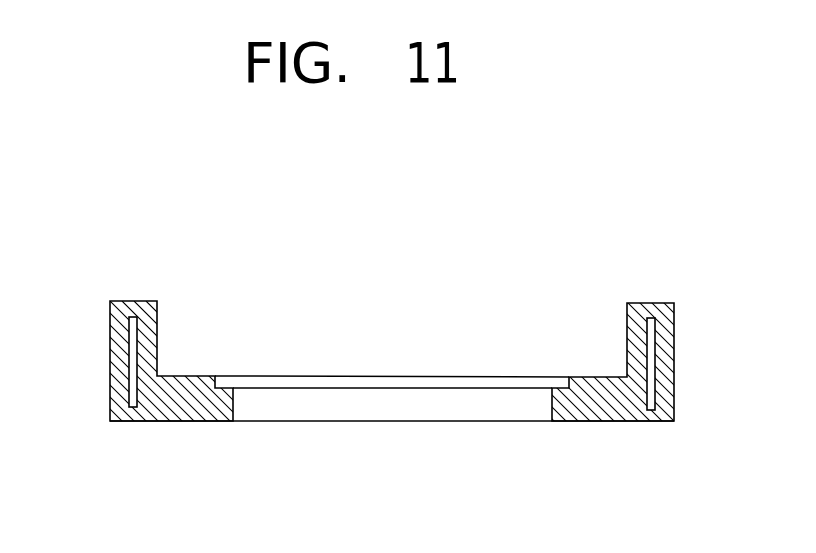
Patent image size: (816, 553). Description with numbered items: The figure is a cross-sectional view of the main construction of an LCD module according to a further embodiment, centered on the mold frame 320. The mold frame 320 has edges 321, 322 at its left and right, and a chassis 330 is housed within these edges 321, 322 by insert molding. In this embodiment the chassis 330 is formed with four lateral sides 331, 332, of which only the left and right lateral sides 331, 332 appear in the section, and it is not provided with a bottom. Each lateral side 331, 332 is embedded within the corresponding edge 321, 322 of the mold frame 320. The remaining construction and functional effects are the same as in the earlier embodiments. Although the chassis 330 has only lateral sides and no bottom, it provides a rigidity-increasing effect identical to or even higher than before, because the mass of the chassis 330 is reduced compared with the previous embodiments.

The mold frame 320 is at (348, 421).
The edge of the mold frame 321 is at (110, 377).
The edge of the mold frame 322 is at (674, 348).
The chassis 330 is at (532, 192).
The lateral side of the chassis 331 is at (135, 303).
The lateral side of the chassis 332 is at (643, 303).